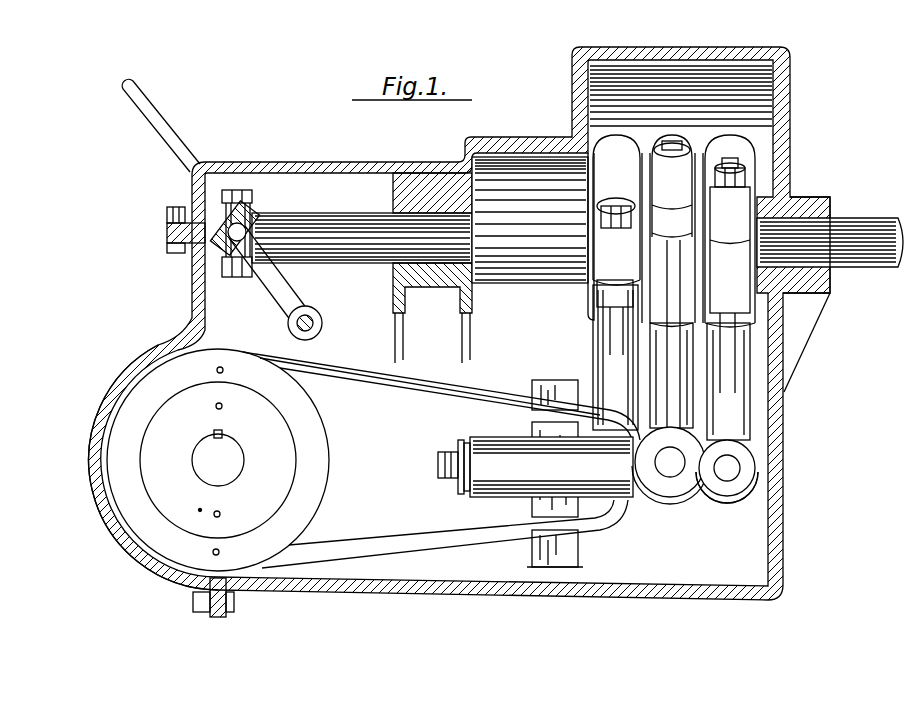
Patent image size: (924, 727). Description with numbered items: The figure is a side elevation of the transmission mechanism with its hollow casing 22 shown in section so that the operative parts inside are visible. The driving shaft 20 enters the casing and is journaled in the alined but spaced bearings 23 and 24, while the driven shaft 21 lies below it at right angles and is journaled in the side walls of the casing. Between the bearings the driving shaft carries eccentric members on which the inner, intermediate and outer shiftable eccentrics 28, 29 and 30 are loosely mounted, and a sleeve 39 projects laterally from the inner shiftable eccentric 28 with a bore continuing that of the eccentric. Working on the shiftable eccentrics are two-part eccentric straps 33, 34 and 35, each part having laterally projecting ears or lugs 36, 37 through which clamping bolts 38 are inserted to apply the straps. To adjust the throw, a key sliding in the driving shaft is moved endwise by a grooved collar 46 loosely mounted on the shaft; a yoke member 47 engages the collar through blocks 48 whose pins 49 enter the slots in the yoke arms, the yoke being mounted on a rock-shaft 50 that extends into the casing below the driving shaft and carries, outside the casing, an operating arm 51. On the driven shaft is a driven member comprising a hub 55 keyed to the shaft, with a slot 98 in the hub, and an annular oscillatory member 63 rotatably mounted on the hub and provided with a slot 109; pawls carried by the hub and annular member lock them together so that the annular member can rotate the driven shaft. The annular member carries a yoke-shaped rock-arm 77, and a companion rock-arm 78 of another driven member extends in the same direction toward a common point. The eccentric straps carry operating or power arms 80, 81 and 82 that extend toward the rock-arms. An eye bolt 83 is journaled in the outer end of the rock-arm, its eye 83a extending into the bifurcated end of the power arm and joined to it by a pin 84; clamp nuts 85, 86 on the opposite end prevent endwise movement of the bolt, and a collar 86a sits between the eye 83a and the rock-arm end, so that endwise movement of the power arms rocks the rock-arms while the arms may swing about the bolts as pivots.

The driving shaft 20 is at (872, 220).
The driven shaft 21 is at (210, 472).
The casing 22 is at (724, 50).
The bearing 23 is at (400, 197).
The bearing 24 is at (815, 197).
The inner shiftable eccentric 28 is at (586, 228).
The intermediate shiftable eccentric 29 is at (646, 152).
The outer shiftable eccentric 30 is at (755, 165).
The eccentric strap 33 is at (598, 133).
The eccentric strap 34 is at (680, 141).
The eccentric strap 35 is at (722, 166).
The ear 36 is at (822, 154).
The lug 37 is at (824, 339).
The clamping bolt 38 is at (612, 203).
The sleeve 39 is at (509, 279).
The grooved collar 46 is at (254, 197).
The yoke member 47 is at (277, 300).
The block 48 is at (230, 278).
The pin 49 is at (236, 210).
The rock-shaft 50 is at (315, 316).
The operating arm 51 is at (180, 147).
The hub 55 is at (147, 517).
The annular oscillatory member 63 is at (127, 407).
The rock-arm 77 is at (360, 522).
The rock-arm 78 is at (768, 508).
The operating arm 80 is at (600, 369).
The operating arm 81 is at (671, 335).
The operating arm 82 is at (735, 414).
The eye bolt 83 is at (438, 462).
The eye 83a is at (672, 505).
The pin 84 is at (672, 468).
The clamp nut 85 is at (458, 482).
The clamp nut 86 is at (470, 448).
The collar 86a is at (628, 500).
The slot 98 is at (216, 408).
The slot 109 is at (217, 371).